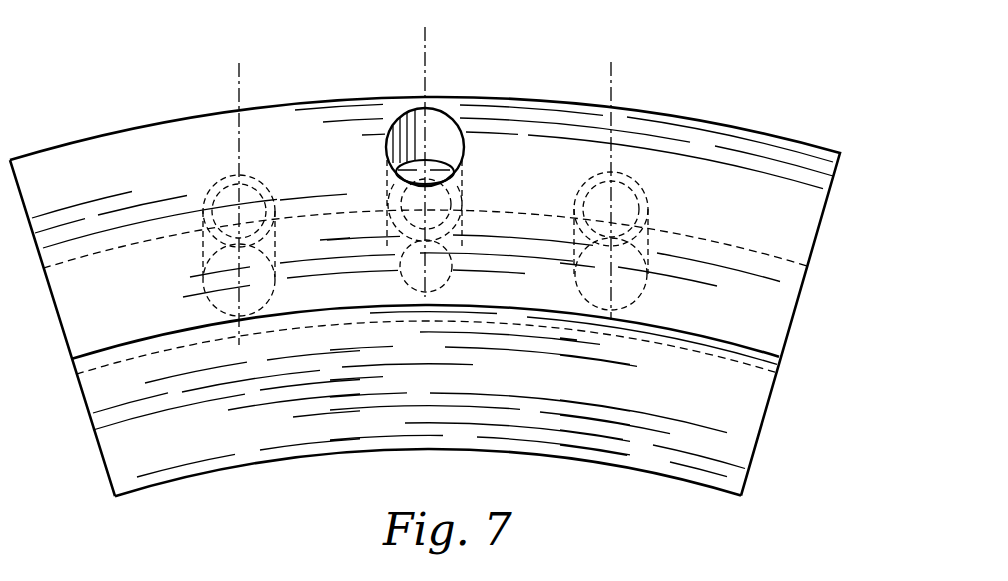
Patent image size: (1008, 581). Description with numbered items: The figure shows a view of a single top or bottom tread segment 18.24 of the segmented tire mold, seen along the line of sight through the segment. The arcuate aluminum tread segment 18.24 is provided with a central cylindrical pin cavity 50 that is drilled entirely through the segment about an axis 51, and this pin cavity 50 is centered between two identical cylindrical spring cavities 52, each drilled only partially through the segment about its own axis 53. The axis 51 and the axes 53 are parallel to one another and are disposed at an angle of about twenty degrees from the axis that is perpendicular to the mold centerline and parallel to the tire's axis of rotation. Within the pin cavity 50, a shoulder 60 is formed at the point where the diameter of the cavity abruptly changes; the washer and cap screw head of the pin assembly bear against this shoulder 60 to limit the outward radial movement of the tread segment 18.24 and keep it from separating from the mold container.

The top and bottom tread segments 18.24 is at (777, 295).
The central cylindrical pin cavity 50 is at (483, 158).
The axis of the pin cavity 51 is at (425, 52).
The cylindrical spring cavities 52 is at (650, 187).
The axes of the spring cavities 53 is at (612, 87).
The shoulder 60 is at (460, 197).